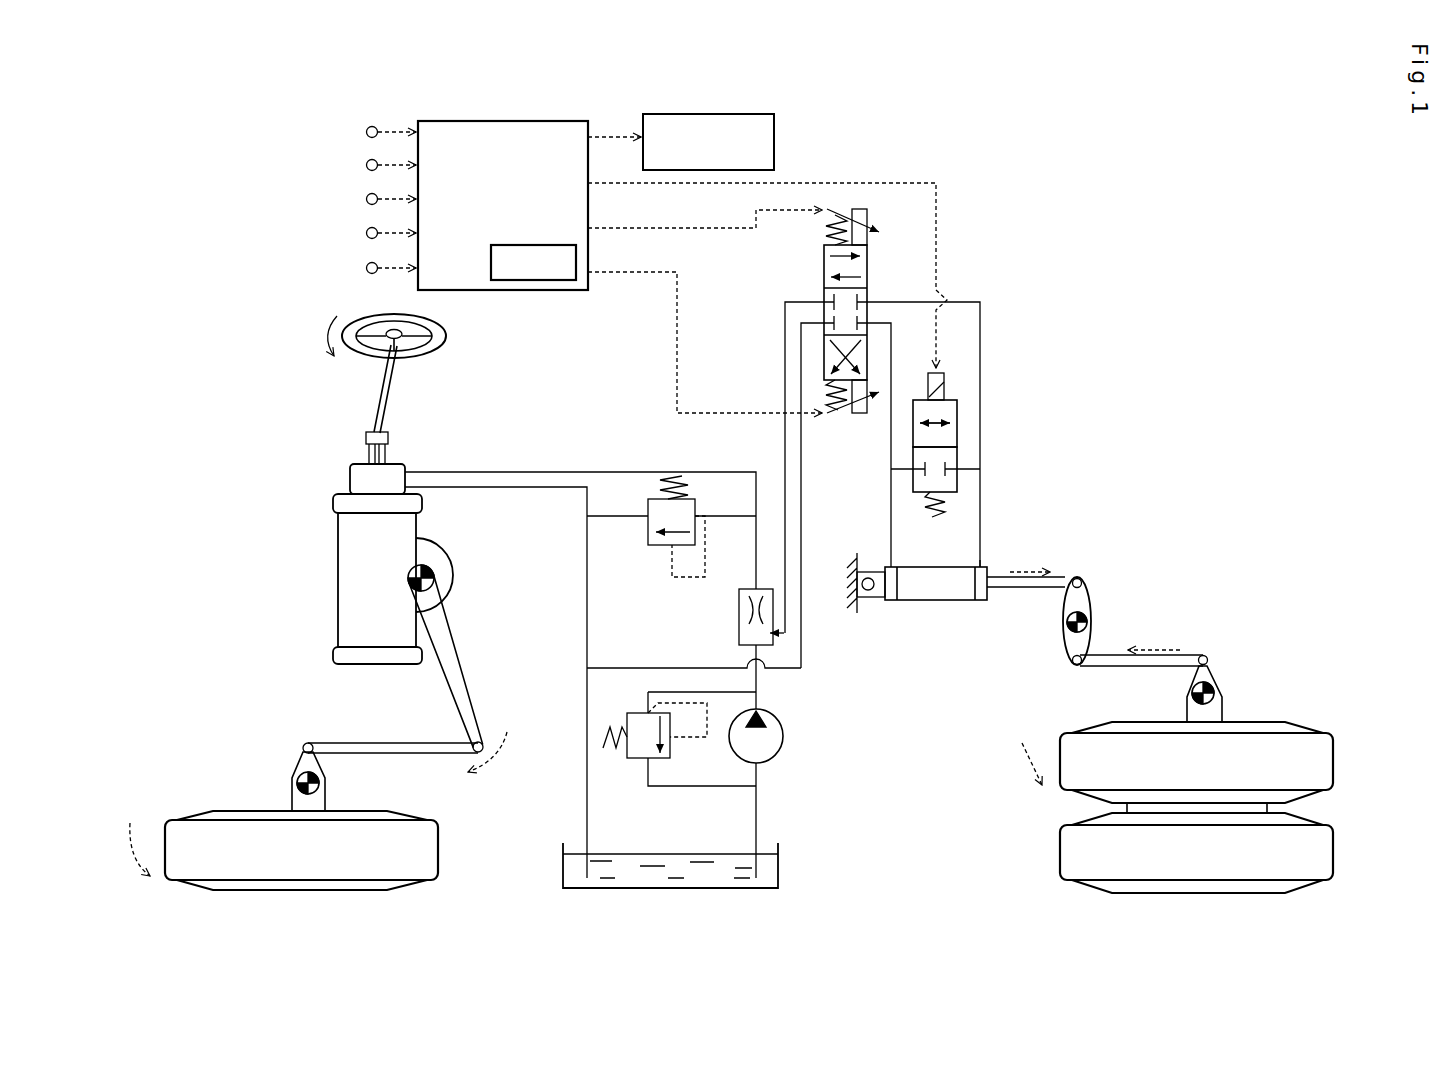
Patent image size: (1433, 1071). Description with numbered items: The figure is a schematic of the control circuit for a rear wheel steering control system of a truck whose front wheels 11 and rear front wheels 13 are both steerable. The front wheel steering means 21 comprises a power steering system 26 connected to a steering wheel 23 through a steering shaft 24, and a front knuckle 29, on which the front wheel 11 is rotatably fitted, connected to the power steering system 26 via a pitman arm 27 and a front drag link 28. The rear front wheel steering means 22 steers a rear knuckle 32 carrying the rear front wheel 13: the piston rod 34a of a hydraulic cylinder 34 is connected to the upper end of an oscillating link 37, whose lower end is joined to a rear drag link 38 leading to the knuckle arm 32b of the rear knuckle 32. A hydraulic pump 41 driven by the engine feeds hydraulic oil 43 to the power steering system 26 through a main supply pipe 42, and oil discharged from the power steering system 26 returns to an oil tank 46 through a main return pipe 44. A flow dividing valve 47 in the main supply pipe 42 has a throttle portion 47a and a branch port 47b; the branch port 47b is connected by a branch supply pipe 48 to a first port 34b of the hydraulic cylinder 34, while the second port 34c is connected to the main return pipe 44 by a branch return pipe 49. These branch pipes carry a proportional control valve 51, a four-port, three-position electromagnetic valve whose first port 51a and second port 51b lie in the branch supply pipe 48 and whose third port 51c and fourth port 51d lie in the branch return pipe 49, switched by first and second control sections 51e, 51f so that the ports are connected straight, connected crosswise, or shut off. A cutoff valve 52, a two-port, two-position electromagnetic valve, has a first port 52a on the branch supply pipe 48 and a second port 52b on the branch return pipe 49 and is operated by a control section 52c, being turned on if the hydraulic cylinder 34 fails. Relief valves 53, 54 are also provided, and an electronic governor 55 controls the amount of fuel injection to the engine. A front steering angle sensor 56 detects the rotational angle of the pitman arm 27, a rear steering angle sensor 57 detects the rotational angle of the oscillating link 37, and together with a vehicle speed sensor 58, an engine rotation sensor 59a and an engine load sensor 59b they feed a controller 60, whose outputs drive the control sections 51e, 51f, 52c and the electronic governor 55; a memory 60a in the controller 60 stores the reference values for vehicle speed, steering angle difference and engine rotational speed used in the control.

The front wheel 11 is at (442, 855).
The rear front wheel 13 is at (1060, 862).
The front wheel steering means 21 is at (393, 608).
The rear front wheel steering means 22 is at (1090, 689).
The steering wheel 23 is at (446, 336).
The steering shaft 24 is at (386, 408).
The power steering system 26 is at (336, 624).
The pitman arm 27 is at (463, 638).
The front drag link 28 is at (377, 755).
The front knuckle 29 is at (290, 787).
The rear knuckle 32 is at (1226, 705).
The knuckle arm 32b is at (1222, 672).
The hydraulic cylinder 34 is at (956, 591).
The piston rod 34a is at (1008, 590).
The first port 34b is at (986, 566).
The second port 34c is at (888, 565).
The oscillating link 37 is at (1092, 600).
The rear drag link 38 is at (1107, 668).
The hydraulic pump 41 is at (783, 736).
The main supply pipe 42 is at (760, 681).
The hydraulic oil 43 is at (762, 856).
The main return pipe 44 is at (587, 558).
The oil tank 46 is at (780, 864).
The flow dividing valve 47 is at (759, 628).
The throttle portion 47a is at (738, 607).
The branch port 47b is at (788, 638).
The branch supply pipe 48 is at (784, 462).
The branch return pipe 49 is at (802, 498).
The proportional control valve 51 is at (828, 341).
The first port 51a is at (823, 298).
The second port 51b is at (868, 298).
The third port 51c is at (822, 321).
The fourth port 51d is at (868, 323).
The first control section 51e is at (868, 226).
The second control section 51f is at (856, 414).
The cutoff valve 52 is at (935, 446).
The first port 52a is at (958, 496).
The second port 52b is at (912, 466).
The control section 52c is at (945, 378).
The relief valve 53 is at (653, 547).
The relief valve 54 is at (632, 762).
The electronic governor 55 is at (775, 140).
The front steering angle sensor 56 is at (366, 200).
The rear steering angle sensor 57 is at (366, 234).
The vehicle speed sensor 58 is at (366, 269).
The engine rotation sensor 59a is at (366, 133).
The engine load sensor 59b is at (366, 166).
The controller 60 is at (515, 291).
The memory 60a is at (587, 282).